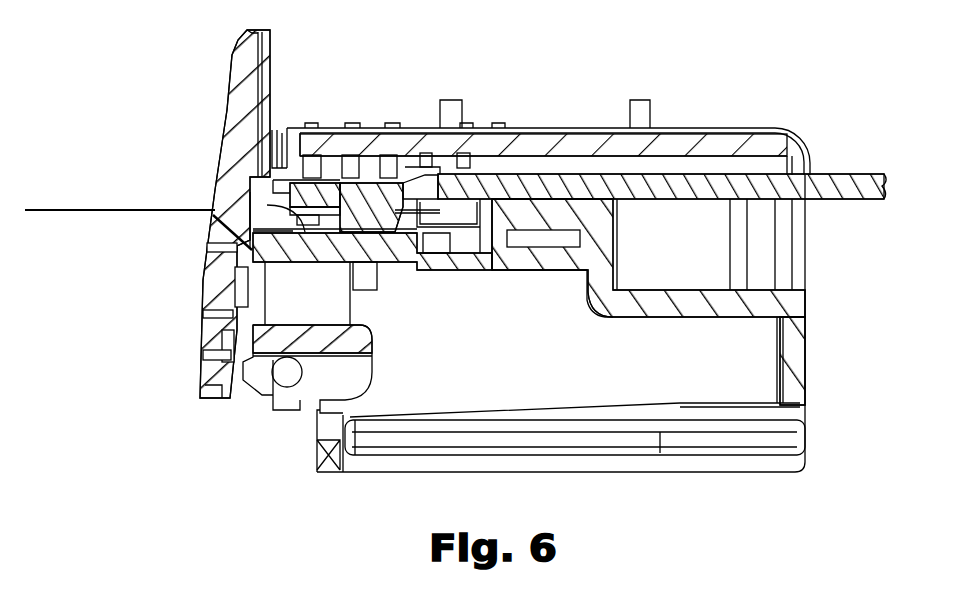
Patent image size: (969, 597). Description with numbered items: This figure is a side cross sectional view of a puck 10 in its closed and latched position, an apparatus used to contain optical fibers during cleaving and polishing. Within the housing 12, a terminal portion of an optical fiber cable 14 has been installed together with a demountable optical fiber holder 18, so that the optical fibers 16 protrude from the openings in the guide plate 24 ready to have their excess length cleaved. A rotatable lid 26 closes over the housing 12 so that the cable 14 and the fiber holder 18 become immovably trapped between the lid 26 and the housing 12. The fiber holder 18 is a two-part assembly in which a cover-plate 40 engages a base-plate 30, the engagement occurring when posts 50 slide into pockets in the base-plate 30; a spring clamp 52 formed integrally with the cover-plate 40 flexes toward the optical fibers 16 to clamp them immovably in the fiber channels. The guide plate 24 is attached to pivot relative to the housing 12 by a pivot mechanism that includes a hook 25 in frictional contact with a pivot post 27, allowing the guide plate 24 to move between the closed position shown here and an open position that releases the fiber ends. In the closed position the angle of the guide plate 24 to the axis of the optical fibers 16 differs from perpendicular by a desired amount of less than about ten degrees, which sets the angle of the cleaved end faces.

The puck 10 is at (673, 80).
The housing 12 is at (750, 360).
The optical fiber cable 14 is at (615, 195).
The optical fibers 16 is at (93, 210).
The optical fiber holder 18 is at (340, 200).
The guide plate 24 is at (215, 280).
The hook 25 is at (327, 385).
The lid 26 is at (800, 158).
The pivot post 27 is at (283, 375).
The base-plate 30 is at (307, 205).
The cover-plate 40 is at (390, 202).
The posts 50 is at (390, 240).
The spring clamp 52 is at (318, 190).